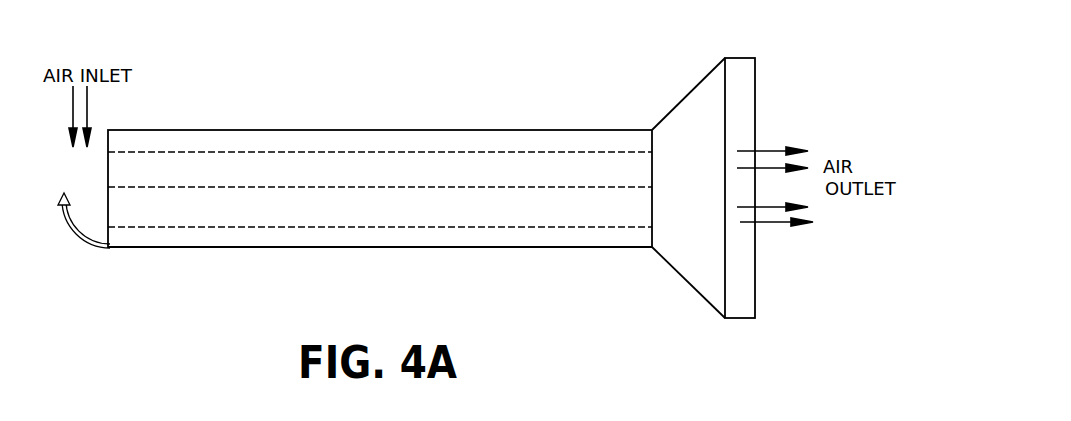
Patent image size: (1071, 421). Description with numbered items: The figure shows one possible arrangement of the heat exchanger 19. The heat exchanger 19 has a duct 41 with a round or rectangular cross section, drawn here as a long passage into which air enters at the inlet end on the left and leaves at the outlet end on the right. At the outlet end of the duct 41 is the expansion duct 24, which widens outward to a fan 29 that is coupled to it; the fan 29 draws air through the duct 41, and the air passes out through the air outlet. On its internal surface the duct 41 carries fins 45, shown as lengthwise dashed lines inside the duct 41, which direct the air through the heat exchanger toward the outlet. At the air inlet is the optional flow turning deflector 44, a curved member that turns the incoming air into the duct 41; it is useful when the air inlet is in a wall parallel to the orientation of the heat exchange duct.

The heat exchanger 19 is at (369, 123).
The expansion duct 24 is at (683, 99).
The fan 29 is at (737, 58).
The duct 41 is at (480, 248).
The flow turning deflector 44 is at (70, 246).
The fins 45 is at (365, 227).